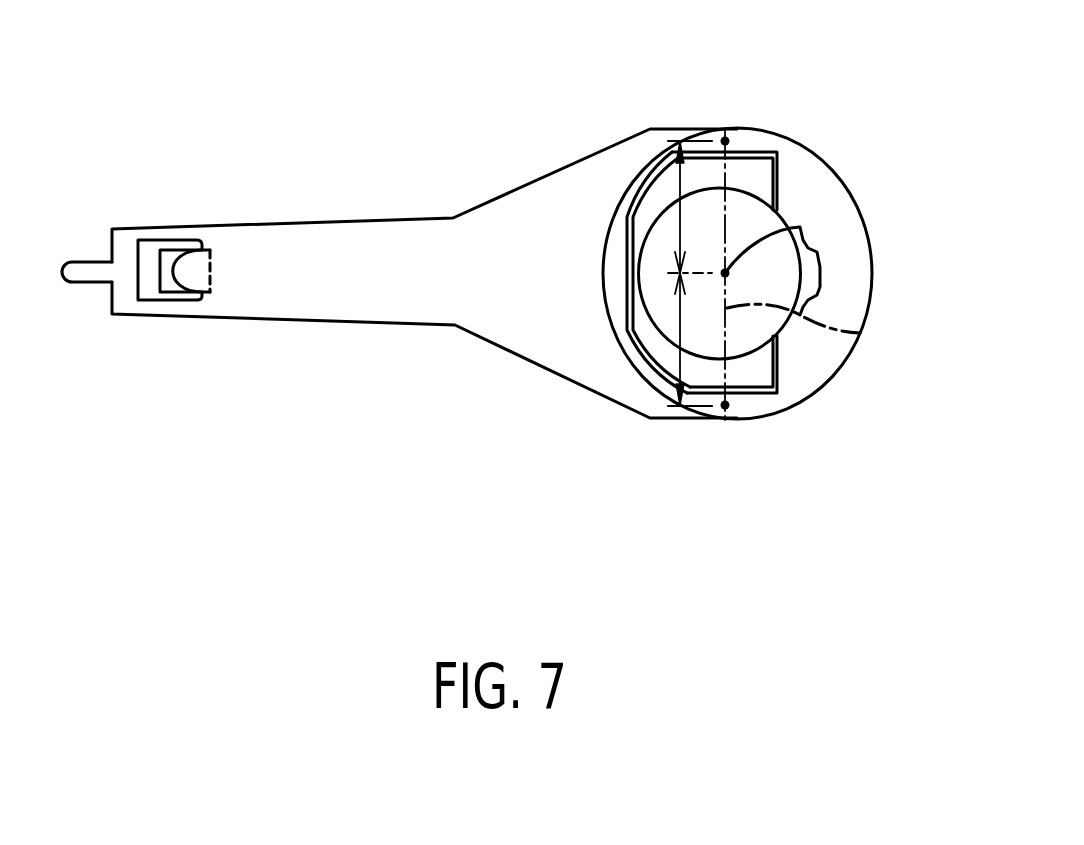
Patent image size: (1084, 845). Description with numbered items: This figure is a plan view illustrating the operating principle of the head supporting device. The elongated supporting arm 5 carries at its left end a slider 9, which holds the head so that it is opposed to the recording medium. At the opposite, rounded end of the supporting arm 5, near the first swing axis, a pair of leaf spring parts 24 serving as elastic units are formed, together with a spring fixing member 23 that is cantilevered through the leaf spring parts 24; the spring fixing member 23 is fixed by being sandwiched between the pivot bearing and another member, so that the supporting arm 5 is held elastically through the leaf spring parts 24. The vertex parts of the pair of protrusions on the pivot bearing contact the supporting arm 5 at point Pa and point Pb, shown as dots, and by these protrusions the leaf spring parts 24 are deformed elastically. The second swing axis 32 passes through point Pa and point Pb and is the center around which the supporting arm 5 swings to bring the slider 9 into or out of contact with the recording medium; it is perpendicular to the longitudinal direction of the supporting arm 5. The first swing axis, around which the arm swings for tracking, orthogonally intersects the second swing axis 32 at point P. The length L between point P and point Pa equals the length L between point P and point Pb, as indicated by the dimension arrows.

The supporting arm 5 is at (305, 282).
The slider 9 is at (172, 289).
The spring fixing member 23 is at (652, 340).
The leaf spring parts 24 is at (757, 170).
The second swing axis 32 is at (860, 333).
The point P is at (800, 227).
The point Pa is at (725, 406).
The point Pb is at (724, 138).
The length L is at (677, 217).